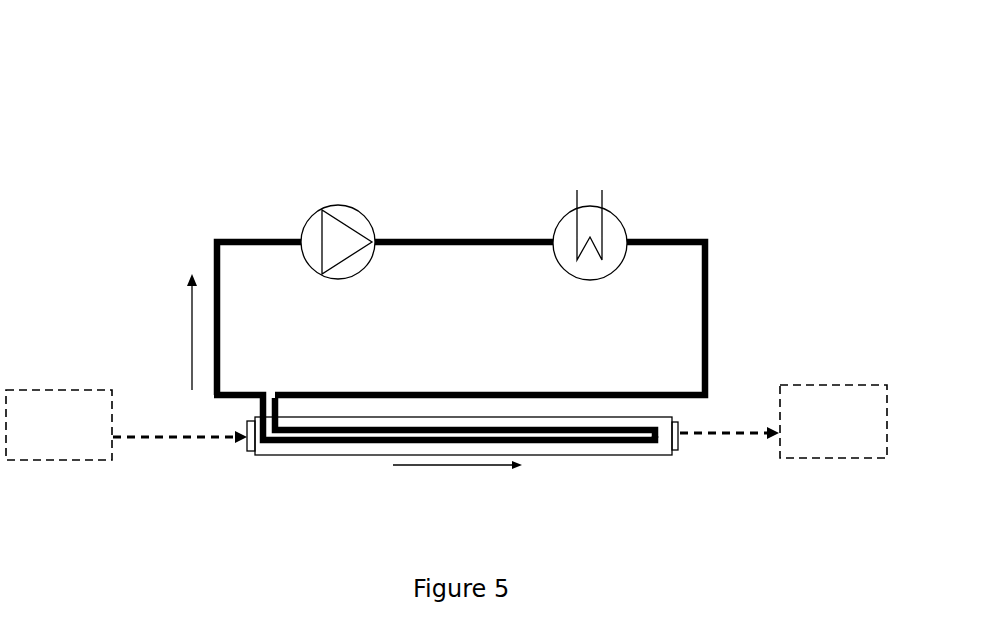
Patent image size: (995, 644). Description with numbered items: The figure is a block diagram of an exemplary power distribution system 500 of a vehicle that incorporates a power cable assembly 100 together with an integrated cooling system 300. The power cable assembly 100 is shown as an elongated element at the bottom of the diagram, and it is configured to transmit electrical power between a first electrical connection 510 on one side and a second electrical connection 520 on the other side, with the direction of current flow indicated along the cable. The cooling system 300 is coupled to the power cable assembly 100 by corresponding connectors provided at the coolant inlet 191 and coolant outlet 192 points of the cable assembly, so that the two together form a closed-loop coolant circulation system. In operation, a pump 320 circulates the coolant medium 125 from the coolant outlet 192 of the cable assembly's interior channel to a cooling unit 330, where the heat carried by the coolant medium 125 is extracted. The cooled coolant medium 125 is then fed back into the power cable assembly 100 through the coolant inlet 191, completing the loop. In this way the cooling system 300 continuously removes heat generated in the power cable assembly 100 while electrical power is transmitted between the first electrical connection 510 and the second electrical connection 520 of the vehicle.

The power distribution system 500 is at (150, 84).
The cooling system 300 is at (735, 388).
The pump 320 is at (383, 217).
The cooling unit 330 is at (645, 216).
The coolant outlet 192 is at (262, 392).
The coolant inlet 191 is at (278, 393).
The power cable assembly 100 is at (280, 460).
The coolant medium 125 is at (136, 332).
The first electrical connection 510 is at (126, 425).
The second electrical connection 520 is at (783, 421).